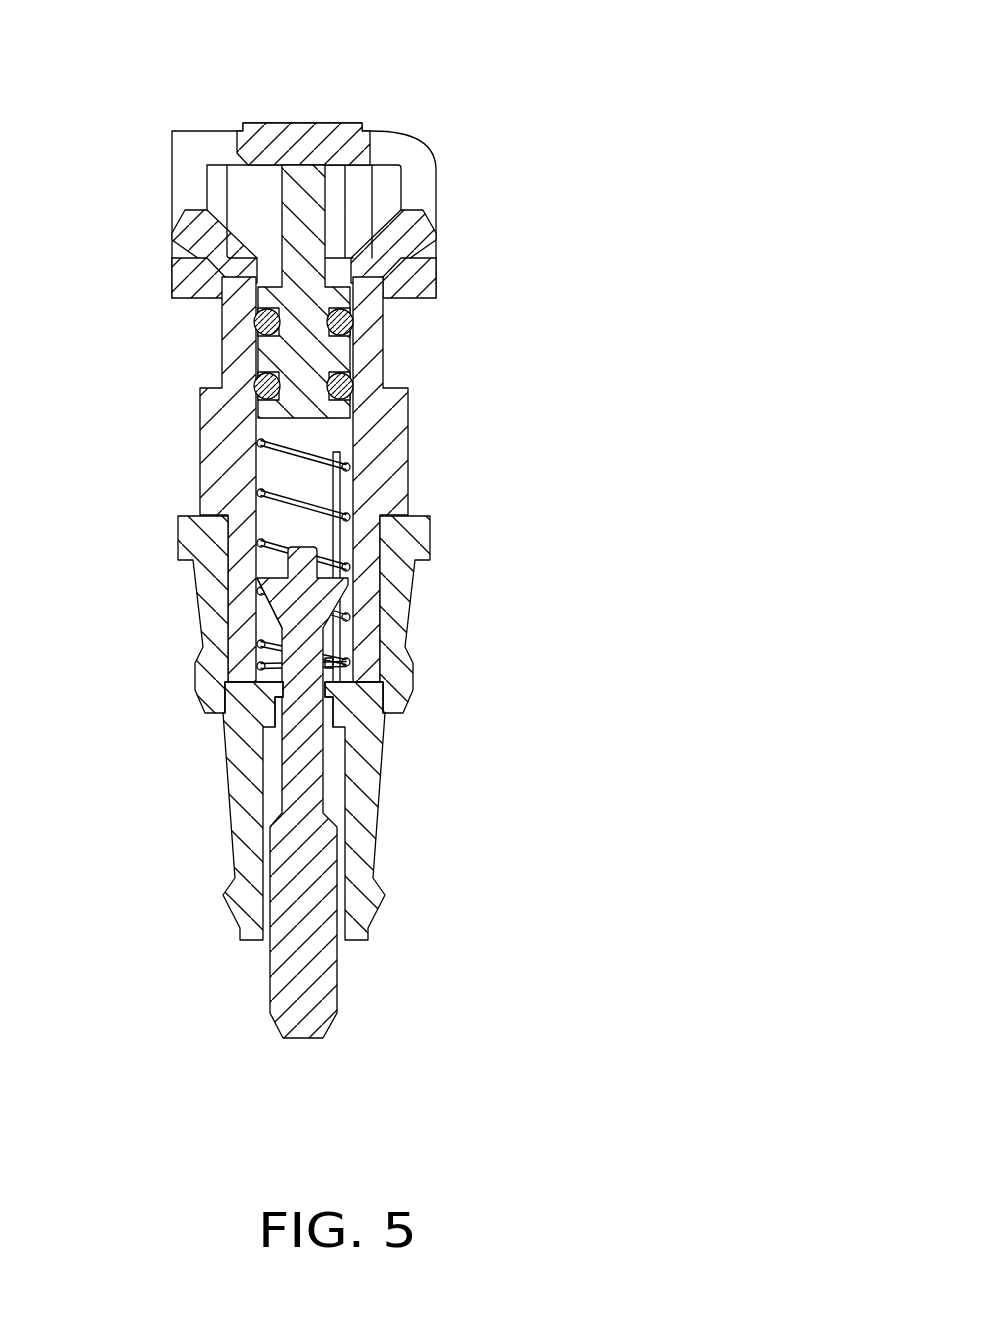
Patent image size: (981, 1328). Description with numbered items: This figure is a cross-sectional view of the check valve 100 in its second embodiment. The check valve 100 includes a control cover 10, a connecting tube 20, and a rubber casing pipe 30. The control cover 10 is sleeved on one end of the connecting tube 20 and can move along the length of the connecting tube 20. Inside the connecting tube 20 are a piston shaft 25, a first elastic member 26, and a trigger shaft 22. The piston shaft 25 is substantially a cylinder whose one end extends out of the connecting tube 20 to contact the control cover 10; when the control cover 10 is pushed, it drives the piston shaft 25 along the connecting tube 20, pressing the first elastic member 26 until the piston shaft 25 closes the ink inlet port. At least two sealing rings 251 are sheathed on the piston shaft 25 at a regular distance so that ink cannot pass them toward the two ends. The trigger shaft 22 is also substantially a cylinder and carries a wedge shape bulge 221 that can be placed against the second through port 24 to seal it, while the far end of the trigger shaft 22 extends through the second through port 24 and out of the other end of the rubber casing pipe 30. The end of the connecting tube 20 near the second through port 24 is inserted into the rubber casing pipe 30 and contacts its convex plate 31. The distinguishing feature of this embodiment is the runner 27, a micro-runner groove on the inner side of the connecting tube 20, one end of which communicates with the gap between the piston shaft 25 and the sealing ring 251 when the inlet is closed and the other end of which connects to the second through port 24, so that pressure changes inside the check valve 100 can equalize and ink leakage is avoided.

The check valve 100 is at (580, 66).
The control cover 10 is at (200, 182).
The connecting tube 20 is at (372, 445).
The trigger shaft 22 is at (263, 792).
The wedge shape bulge 221 is at (261, 594).
The second through port 24 is at (330, 702).
The piston shaft 25 is at (386, 270).
The sealing rings 251 is at (345, 320).
The first elastic member 26 is at (337, 580).
The runner 27 is at (337, 493).
The rubber casing pipe 30 is at (280, 811).
The convex plate 31 is at (255, 708).